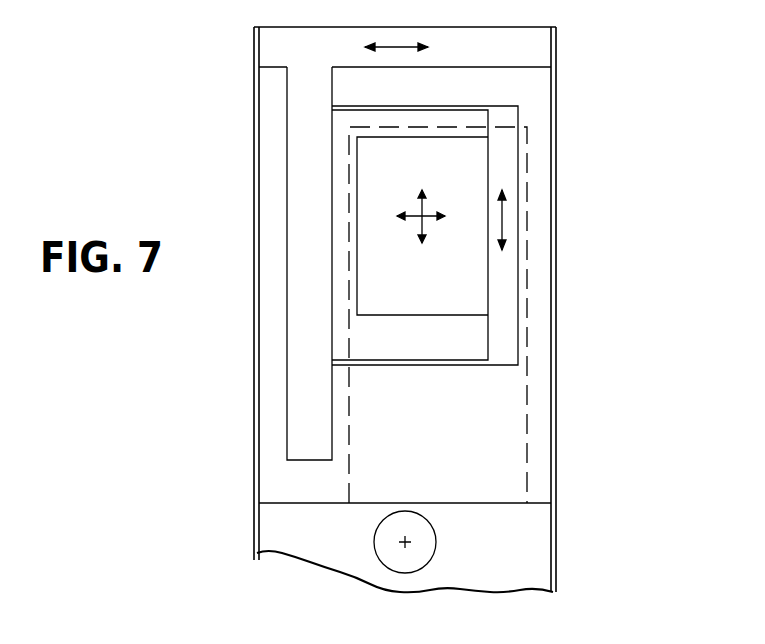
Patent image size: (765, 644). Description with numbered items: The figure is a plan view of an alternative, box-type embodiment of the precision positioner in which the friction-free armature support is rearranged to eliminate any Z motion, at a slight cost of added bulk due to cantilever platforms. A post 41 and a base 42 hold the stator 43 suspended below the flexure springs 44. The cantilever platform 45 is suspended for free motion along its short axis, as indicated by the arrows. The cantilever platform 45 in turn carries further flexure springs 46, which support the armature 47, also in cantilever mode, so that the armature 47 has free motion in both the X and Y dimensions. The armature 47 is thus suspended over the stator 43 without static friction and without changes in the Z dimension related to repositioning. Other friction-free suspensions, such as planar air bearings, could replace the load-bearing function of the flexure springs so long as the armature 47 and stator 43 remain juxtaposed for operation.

The post 41 is at (377, 552).
The base 42 is at (508, 162).
The stator 43 is at (455, 469).
The flexure springs 44 is at (257, 82).
The cantilever platform 45 is at (298, 430).
The flexure springs 46 is at (443, 105).
The armature 47 is at (434, 292).